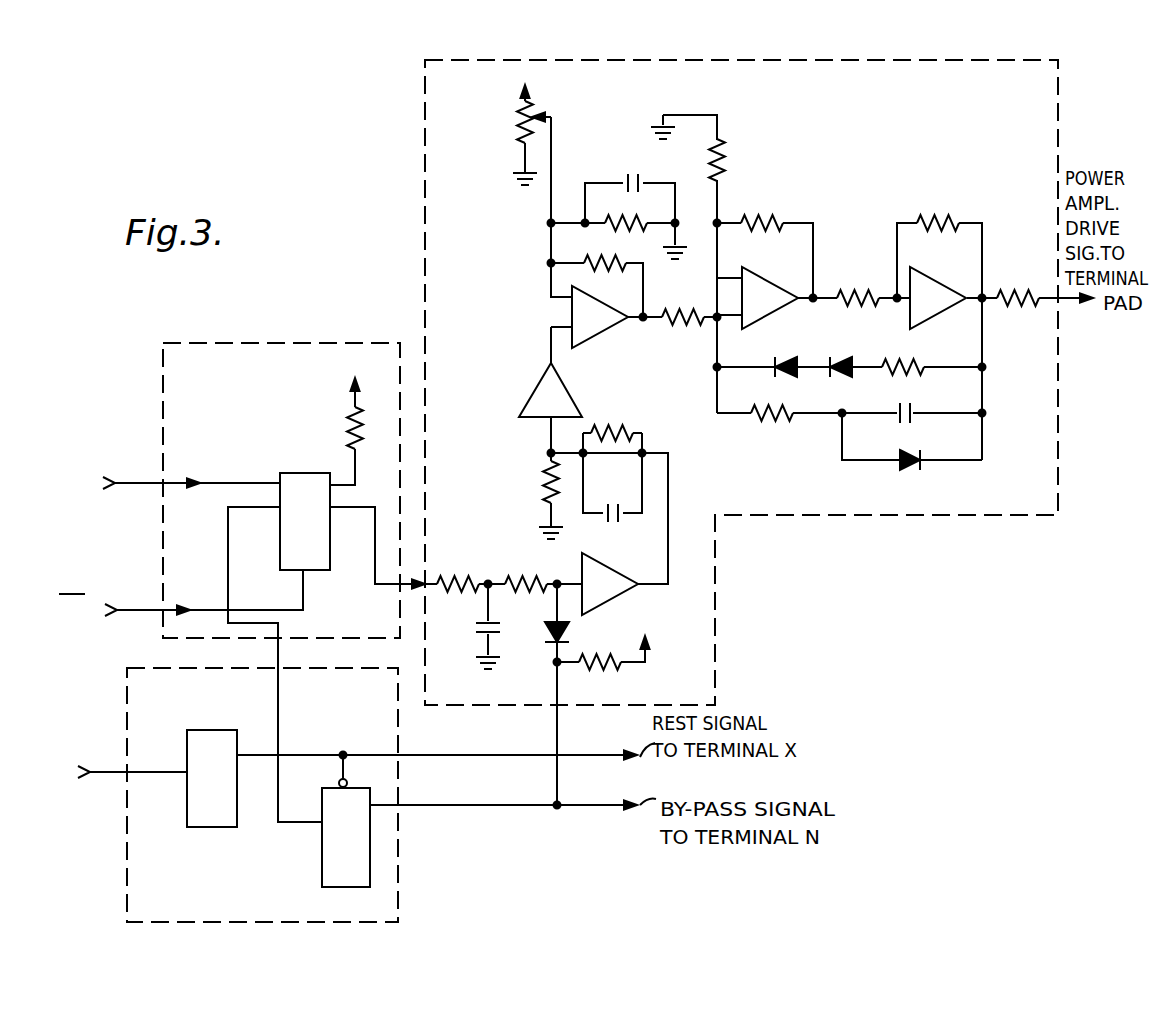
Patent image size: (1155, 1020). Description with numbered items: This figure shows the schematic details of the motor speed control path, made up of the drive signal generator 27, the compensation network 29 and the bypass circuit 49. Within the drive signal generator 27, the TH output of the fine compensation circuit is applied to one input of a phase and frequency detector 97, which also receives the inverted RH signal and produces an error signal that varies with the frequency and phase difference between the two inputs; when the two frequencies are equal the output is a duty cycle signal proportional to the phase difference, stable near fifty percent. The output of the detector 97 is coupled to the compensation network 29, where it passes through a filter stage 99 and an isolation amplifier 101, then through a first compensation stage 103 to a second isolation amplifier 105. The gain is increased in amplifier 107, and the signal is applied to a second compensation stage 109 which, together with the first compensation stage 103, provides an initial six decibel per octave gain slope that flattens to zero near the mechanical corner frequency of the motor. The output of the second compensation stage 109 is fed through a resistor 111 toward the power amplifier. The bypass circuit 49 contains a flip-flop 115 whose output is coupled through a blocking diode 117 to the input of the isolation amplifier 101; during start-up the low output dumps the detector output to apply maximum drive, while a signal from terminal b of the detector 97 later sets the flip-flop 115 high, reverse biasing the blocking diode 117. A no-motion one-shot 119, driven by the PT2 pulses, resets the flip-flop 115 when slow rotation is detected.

The drive signal generator 27 is at (163, 533).
The compensation network 29 is at (718, 570).
The bypass circuit 49 is at (398, 742).
The detector 97 is at (290, 474).
The filter stage 99 is at (491, 562).
The isolation amplifier 101 is at (620, 572).
The first compensation stage 103 is at (663, 442).
The second isolation amplifier 105 is at (532, 390).
The amplifier 107 is at (606, 338).
The second compensation stage 109 is at (847, 252).
The resistor 111 is at (1014, 318).
The flip-flop 115 is at (322, 879).
The blocking diode 117 is at (547, 635).
The no-motion one-shot 119 is at (187, 818).